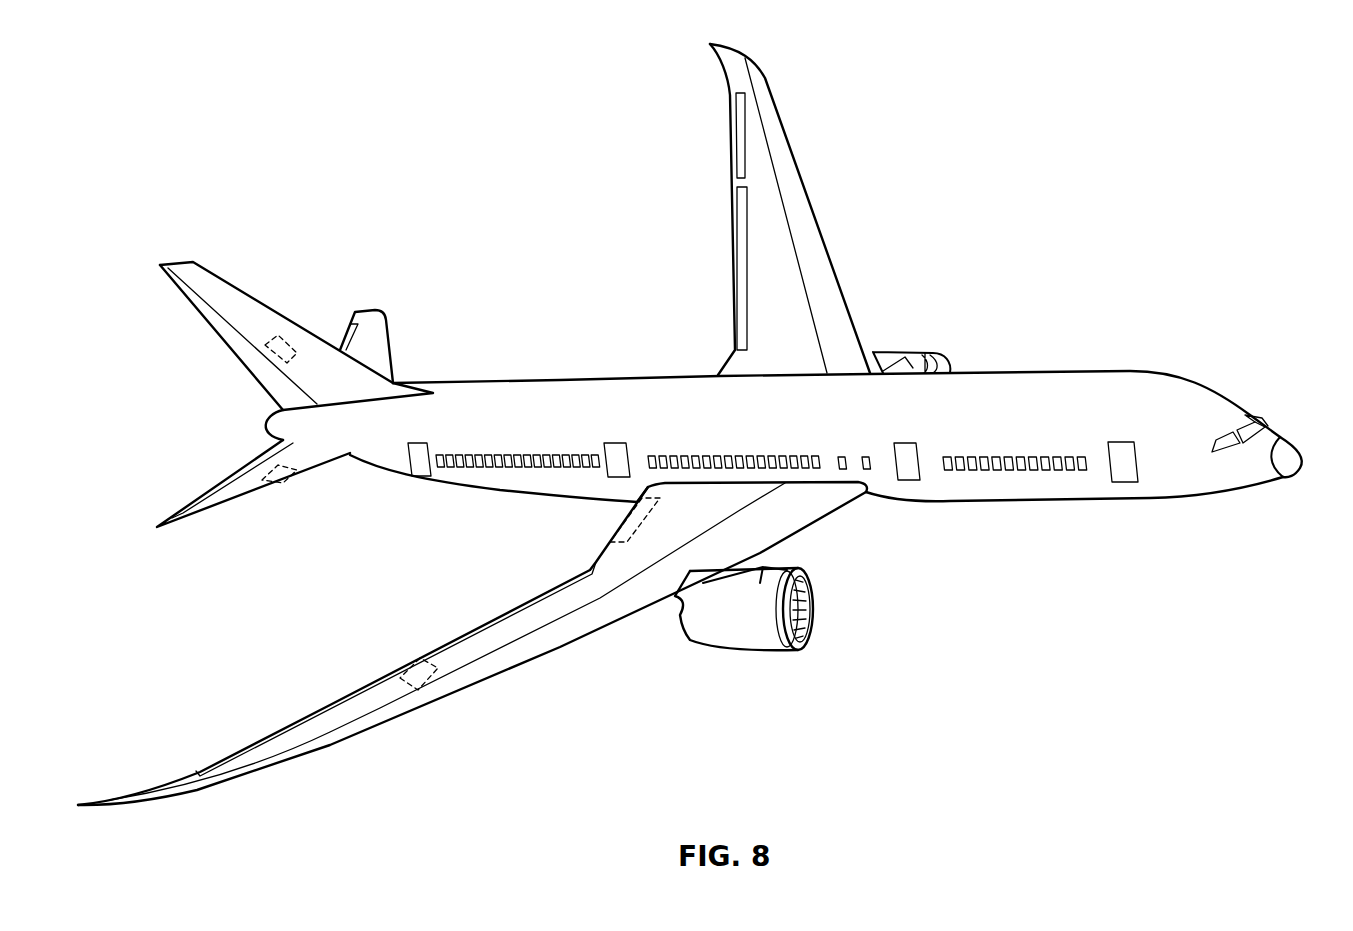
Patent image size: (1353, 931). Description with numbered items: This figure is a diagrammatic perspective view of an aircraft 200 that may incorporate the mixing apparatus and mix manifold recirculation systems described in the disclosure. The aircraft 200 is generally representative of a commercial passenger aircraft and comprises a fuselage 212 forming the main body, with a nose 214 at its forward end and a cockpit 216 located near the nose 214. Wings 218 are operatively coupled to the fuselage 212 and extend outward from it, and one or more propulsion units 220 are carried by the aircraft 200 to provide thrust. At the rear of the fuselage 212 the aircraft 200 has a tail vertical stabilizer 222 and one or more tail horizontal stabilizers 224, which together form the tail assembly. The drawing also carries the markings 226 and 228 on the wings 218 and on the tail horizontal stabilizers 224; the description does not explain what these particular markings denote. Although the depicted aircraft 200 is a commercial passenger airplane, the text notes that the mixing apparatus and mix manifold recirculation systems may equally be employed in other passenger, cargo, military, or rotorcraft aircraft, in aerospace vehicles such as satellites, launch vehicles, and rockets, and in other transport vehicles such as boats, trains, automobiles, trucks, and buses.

The aircraft 200 is at (1052, 158).
The fuselage 212 is at (1015, 383).
The nose 214 is at (1282, 466).
The cockpit 216 is at (1257, 418).
The wings 218 is at (780, 128).
The propulsion units 220 is at (920, 352).
The tail vertical stabilizer 222 is at (228, 297).
The tail horizontal stabilizers 224 is at (380, 342).
The leading edge region 226 is at (308, 340).
The sensor / detection region 228 is at (278, 335).